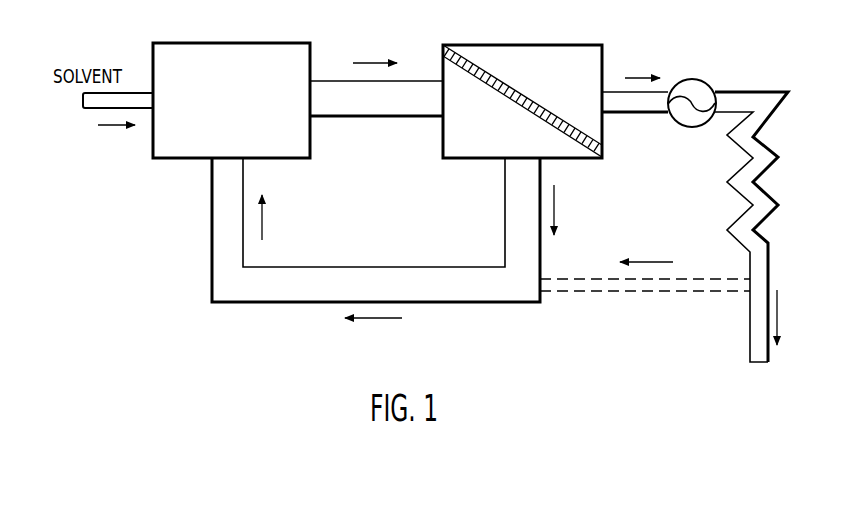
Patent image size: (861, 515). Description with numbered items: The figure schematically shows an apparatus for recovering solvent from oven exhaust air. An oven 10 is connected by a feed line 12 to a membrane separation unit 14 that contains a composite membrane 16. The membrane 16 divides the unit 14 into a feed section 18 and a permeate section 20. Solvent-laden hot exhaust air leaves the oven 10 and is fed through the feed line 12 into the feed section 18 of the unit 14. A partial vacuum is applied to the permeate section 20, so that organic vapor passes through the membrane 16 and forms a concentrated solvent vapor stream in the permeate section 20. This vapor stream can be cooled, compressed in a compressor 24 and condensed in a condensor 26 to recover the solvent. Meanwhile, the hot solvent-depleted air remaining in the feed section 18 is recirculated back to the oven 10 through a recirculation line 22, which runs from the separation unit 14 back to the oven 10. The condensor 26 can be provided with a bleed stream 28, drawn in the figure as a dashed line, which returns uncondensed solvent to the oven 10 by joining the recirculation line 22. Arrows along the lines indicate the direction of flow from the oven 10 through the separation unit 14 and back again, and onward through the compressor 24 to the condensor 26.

The oven 10 is at (271, 43).
The feed line 12 is at (419, 80).
The membrane separation unit 14 is at (575, 45).
The composite membrane 16 is at (504, 77).
The feed section 18 is at (491, 137).
The permeate section 20 is at (585, 101).
The recirculation line 22 is at (502, 293).
The compressor 24 is at (694, 78).
The condensor 26 is at (745, 201).
The bleed stream 28 is at (700, 290).